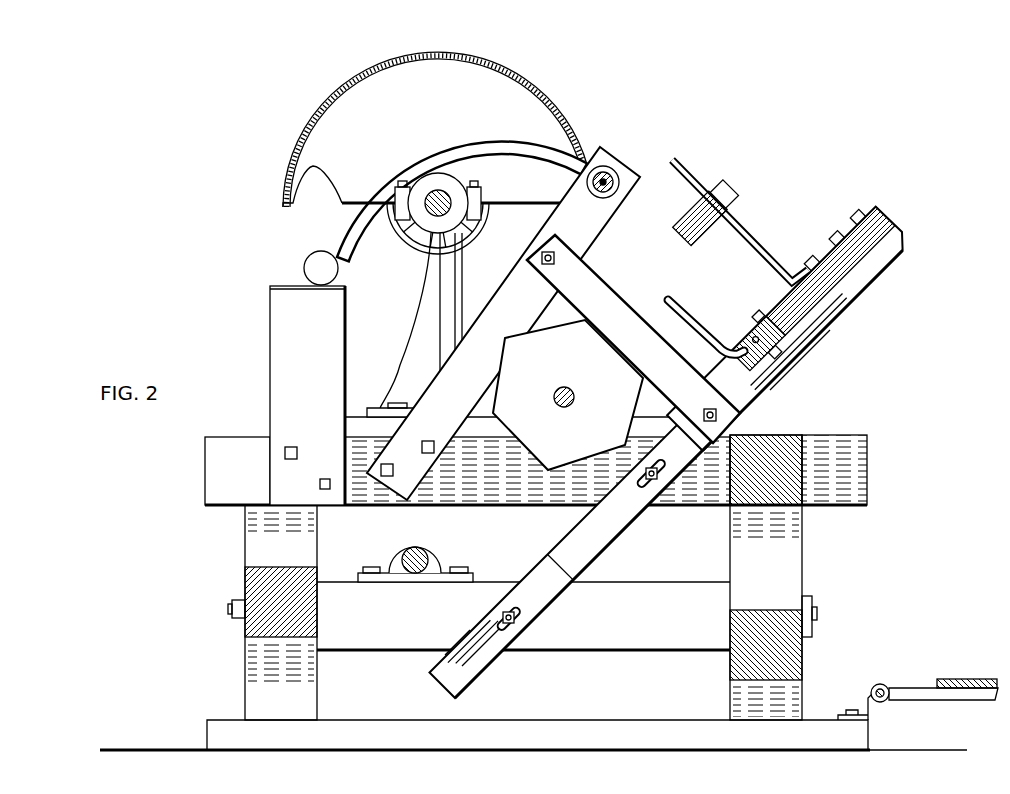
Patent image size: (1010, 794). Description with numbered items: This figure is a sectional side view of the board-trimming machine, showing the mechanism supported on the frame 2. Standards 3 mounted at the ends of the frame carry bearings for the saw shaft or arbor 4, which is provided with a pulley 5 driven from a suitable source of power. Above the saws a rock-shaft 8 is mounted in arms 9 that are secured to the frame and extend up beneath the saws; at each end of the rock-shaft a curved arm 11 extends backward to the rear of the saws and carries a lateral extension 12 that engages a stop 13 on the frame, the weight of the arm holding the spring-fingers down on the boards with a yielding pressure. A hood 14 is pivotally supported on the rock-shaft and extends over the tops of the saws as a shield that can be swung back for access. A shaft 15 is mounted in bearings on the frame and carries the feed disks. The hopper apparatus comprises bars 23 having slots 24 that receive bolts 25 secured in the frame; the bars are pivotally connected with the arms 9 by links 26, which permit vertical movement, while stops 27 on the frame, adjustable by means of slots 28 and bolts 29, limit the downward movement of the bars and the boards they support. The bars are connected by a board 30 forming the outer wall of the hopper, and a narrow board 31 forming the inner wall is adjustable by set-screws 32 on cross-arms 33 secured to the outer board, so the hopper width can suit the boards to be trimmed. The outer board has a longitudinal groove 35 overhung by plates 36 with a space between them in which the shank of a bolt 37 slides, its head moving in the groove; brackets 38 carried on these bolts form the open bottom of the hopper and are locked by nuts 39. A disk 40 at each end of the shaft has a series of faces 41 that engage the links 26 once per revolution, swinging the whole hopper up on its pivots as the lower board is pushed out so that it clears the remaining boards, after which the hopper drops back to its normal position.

The frame 2 is at (250, 447).
The standards 3 is at (408, 285).
The saw shaft or arbor 4 is at (448, 199).
The pulley 5 is at (483, 222).
The rock-shaft 8 is at (612, 176).
The arms 9 is at (612, 216).
The curved arms 11 is at (527, 147).
The lateral extensions 12 is at (314, 260).
The stops 13 is at (270, 341).
The hood 14 is at (517, 77).
The shaft 15 is at (572, 392).
The bars 23 is at (773, 372).
The slots 24 is at (645, 492).
The bolts 25 is at (658, 478).
The links 26 is at (690, 375).
The stops 27 is at (553, 597).
The slots 28 is at (522, 628).
The bolts 29 is at (503, 617).
The board 30 is at (822, 270).
The narrow board or bar 31 is at (700, 236).
The set-screws 32 is at (730, 190).
The cross-arms 33 is at (764, 248).
The longitudinal groove 35 is at (760, 326).
The plates 36 is at (782, 328).
The bolt 37 is at (758, 336).
The brackets 38 is at (701, 320).
The nuts 39 is at (780, 347).
The disks 40 is at (568, 395).
The faces 41 is at (530, 458).